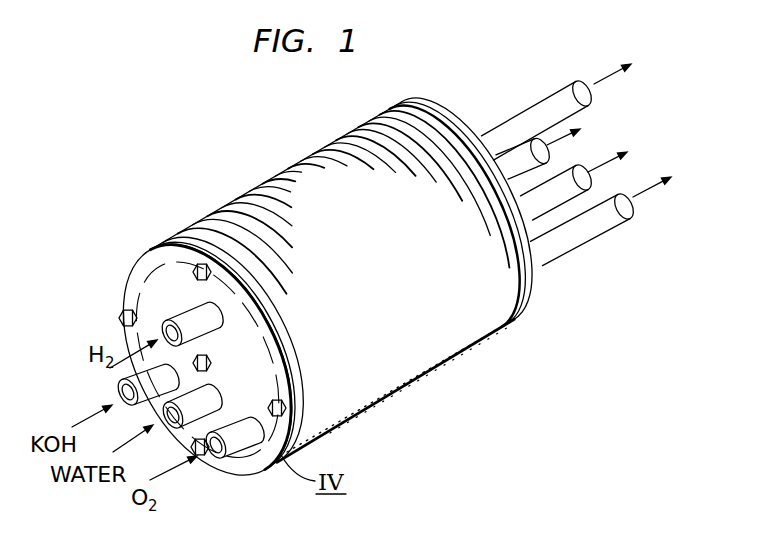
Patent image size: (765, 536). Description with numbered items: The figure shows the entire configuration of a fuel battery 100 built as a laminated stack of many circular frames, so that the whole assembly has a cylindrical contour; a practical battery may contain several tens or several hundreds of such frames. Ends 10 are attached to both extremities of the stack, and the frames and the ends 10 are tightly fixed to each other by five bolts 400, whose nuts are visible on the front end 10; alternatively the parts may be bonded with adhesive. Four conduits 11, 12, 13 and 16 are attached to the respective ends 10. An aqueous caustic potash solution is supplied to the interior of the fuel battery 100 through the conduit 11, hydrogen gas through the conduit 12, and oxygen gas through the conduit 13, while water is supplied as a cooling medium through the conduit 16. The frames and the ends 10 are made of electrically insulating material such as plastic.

The end 10 is at (430, 105).
The fuel battery 100 is at (506, 414).
The bolt 400 is at (119, 314).
The conduit 11 is at (121, 391).
The conduit 12 is at (205, 327).
The conduit 16 is at (207, 397).
The conduit 13 is at (231, 458).